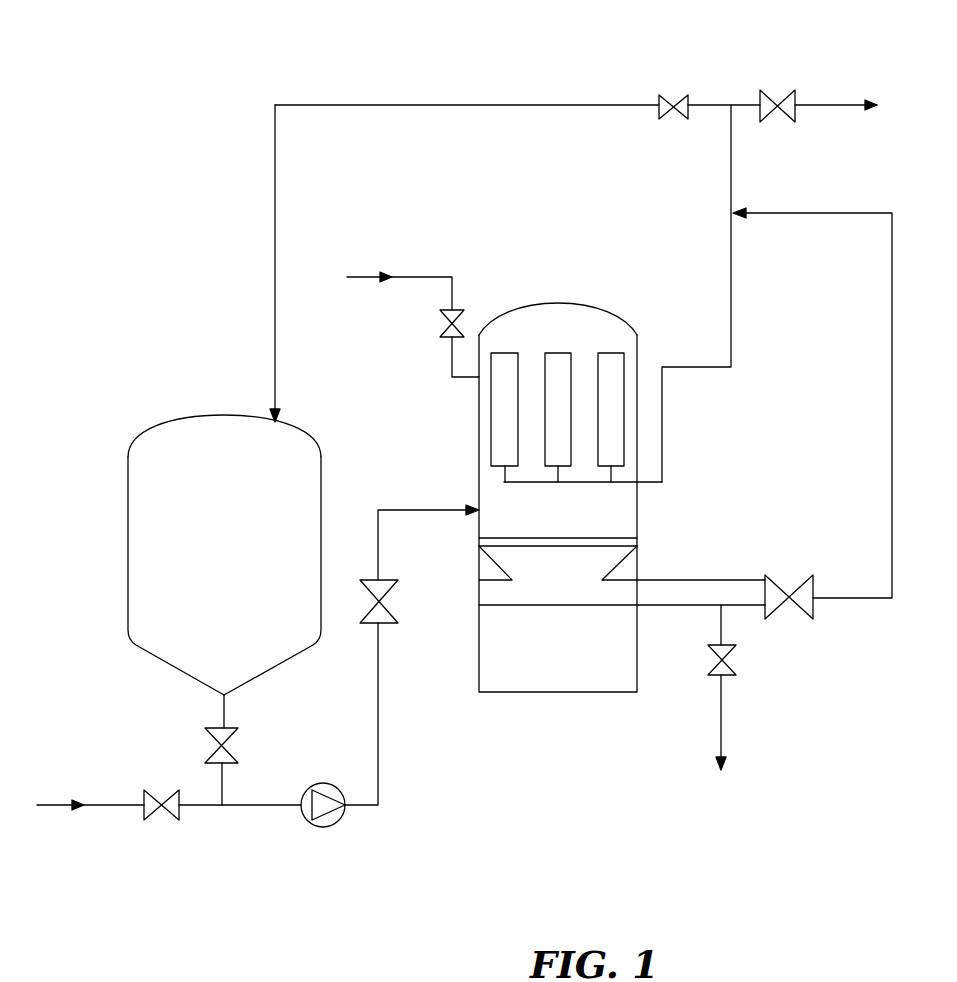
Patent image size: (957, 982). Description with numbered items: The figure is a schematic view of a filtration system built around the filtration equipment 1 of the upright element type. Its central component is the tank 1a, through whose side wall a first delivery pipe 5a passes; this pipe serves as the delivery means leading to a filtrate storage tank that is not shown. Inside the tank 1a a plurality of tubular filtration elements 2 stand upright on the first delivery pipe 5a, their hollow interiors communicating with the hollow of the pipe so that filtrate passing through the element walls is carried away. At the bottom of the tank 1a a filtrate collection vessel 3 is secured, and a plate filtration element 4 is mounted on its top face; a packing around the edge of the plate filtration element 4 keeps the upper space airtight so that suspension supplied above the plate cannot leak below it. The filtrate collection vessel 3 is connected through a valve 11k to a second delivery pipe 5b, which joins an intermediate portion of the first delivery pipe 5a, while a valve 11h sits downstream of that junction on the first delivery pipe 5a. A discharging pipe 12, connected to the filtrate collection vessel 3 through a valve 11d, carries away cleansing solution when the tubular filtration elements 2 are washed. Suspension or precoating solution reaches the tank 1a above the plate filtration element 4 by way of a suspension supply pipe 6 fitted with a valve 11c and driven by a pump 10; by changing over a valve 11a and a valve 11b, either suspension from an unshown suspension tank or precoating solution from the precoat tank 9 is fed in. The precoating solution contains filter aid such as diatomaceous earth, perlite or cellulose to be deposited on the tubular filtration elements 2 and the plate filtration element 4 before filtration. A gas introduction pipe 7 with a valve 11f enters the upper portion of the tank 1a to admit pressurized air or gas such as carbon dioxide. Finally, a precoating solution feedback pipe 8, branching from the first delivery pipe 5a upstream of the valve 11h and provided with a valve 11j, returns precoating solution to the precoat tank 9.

The filtration equipment 1 is at (603, 778).
The tank 1a is at (573, 304).
The tubular filtration elements 2 is at (510, 380).
The filtrate collection vessel 3 is at (535, 591).
The plate filtration element 4 is at (612, 539).
The first delivery pipe 5a is at (730, 265).
The second delivery pipe 5b is at (822, 214).
The suspension supply pipe 6 is at (378, 772).
The gas introduction pipe 7 is at (436, 277).
The precoating solution feedback pipe 8 is at (322, 103).
The precoat tank 9 is at (176, 422).
The pump 10 is at (340, 822).
The valve 11a is at (172, 818).
The valve 11b is at (230, 755).
The valve 11c is at (385, 598).
The valve 11d is at (714, 662).
The valve 11f is at (441, 323).
The valve 11h is at (773, 99).
The valve 11j is at (682, 97).
The valve 11k is at (783, 610).
The discharging pipe 12 is at (721, 716).